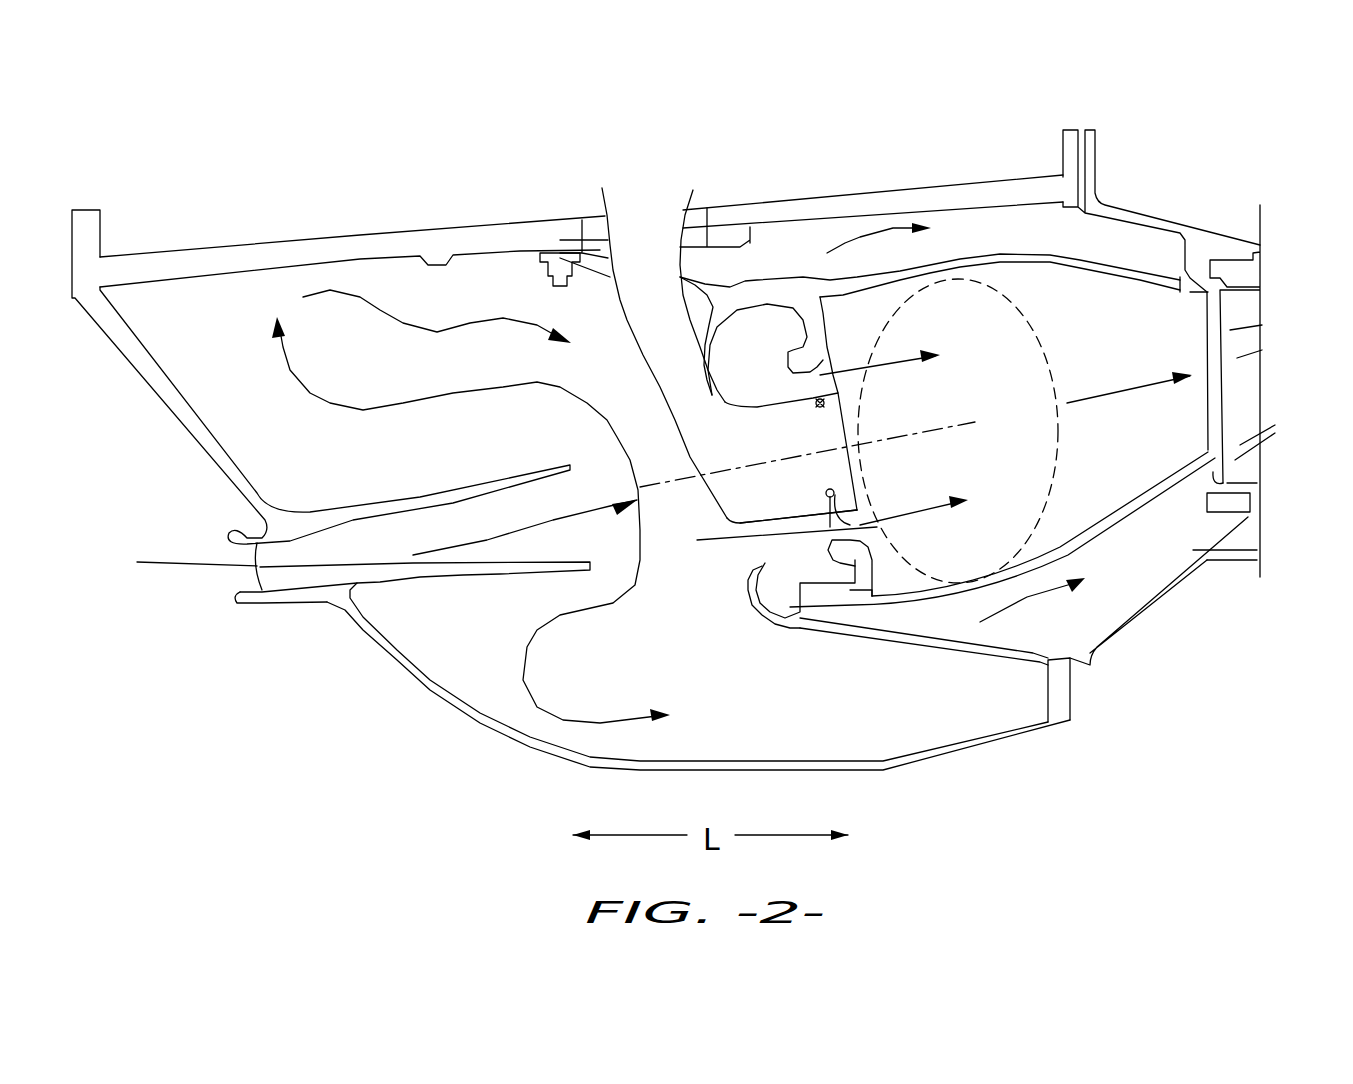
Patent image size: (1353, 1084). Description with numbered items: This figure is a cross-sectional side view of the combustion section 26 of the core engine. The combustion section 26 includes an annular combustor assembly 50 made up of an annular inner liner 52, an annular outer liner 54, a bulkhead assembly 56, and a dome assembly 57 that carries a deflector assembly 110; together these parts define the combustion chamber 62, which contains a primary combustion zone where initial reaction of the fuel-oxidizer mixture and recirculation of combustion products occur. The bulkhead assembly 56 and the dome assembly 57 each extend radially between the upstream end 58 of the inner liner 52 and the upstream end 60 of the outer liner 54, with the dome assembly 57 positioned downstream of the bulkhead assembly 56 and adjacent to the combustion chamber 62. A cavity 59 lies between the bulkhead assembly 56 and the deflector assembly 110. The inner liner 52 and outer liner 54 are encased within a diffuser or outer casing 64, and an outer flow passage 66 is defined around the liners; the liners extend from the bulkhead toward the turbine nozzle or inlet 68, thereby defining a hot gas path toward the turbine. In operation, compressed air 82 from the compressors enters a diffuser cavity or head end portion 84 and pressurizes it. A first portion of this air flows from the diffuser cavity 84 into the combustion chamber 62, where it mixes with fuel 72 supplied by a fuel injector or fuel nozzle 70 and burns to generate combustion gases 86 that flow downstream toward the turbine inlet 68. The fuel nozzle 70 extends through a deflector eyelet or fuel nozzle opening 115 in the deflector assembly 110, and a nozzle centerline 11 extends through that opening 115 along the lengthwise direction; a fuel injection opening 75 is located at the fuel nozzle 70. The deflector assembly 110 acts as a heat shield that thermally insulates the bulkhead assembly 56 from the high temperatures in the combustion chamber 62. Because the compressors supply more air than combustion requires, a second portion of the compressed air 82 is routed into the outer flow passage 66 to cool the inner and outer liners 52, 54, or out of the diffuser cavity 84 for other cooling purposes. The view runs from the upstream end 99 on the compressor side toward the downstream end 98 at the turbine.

The nozzle centerline 11 is at (831, 425).
The combustion section 26 is at (867, 101).
The combustor assembly 50 is at (871, 315).
The inner liner 52 is at (1130, 507).
The outer liner 54 is at (1037, 267).
The bulkhead assembly 56 is at (750, 615).
The dome assembly 57 is at (765, 349).
The upstream end 58 is at (899, 632).
The cavity 59 is at (730, 231).
The upstream end 60 is at (776, 205).
The combustion chamber 62 is at (1102, 364).
The diffuser or outer casing 64 is at (1032, 128).
The outer flow passage 66 is at (1152, 438).
The turbine nozzle or inlet 68 is at (1247, 391).
The fuel injector 70 is at (748, 449).
The fuel 72 is at (813, 497).
The fuel injection opening 75 is at (818, 408).
The compressed air 82 is at (413, 555).
The diffuser cavity or head end portion 84 is at (611, 677).
The combustion gases 86 is at (1140, 387).
The downstream end 98 is at (1337, 394).
The upstream end 99 is at (107, 504).
The deflector assembly 110 is at (892, 311).
The deflector eyelet or fuel nozzle opening 115 is at (850, 384).